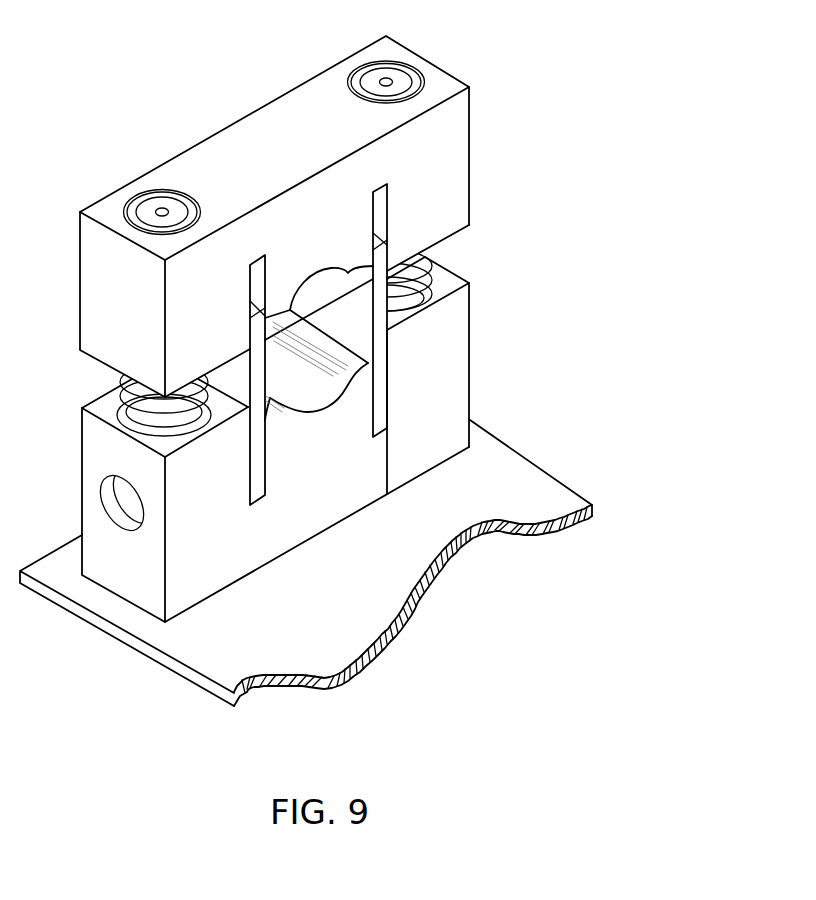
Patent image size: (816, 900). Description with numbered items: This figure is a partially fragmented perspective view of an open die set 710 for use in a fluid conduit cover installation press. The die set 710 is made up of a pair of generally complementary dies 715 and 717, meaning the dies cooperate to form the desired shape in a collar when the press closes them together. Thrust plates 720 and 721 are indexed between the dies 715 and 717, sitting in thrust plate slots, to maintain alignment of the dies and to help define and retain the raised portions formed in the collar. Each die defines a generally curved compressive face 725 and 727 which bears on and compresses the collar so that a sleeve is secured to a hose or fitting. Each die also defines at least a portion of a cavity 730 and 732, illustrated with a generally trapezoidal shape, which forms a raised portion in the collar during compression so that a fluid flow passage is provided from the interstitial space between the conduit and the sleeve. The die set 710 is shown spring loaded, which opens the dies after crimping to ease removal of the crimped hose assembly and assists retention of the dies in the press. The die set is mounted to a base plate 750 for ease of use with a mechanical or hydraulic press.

The die set 710 is at (514, 101).
The die 715 is at (443, 142).
The die 717 is at (447, 315).
The thrust plate 720 is at (257, 492).
The thrust plate 721 is at (366, 322).
The compressive face 725 is at (317, 273).
The compressive face 727 is at (315, 398).
The cavity 730 is at (341, 354).
The cavity 732 is at (280, 432).
The base plate 750 is at (373, 610).